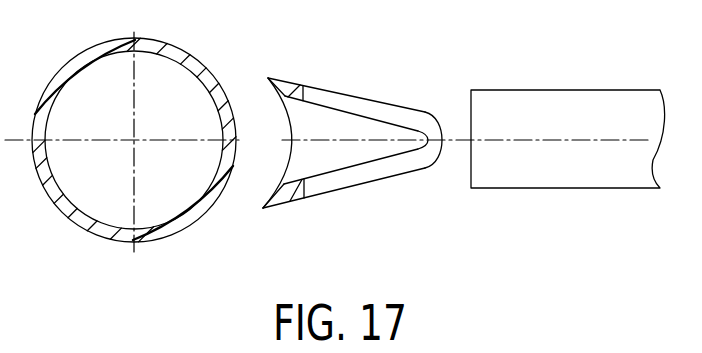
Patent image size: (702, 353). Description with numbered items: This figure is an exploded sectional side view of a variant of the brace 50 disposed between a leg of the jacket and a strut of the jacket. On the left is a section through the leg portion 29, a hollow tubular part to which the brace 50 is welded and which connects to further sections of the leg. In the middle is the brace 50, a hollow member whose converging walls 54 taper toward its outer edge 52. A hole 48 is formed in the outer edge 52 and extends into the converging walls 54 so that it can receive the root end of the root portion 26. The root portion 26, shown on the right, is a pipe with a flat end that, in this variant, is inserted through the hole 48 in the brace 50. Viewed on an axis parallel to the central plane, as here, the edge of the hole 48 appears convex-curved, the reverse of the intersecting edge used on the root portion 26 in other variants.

The root portion 26 is at (542, 102).
The leg portion 29 is at (193, 70).
The hole 48 is at (390, 115).
The brace 50 is at (405, 179).
The outer edge 52 is at (440, 137).
The converging walls 54 is at (338, 93).